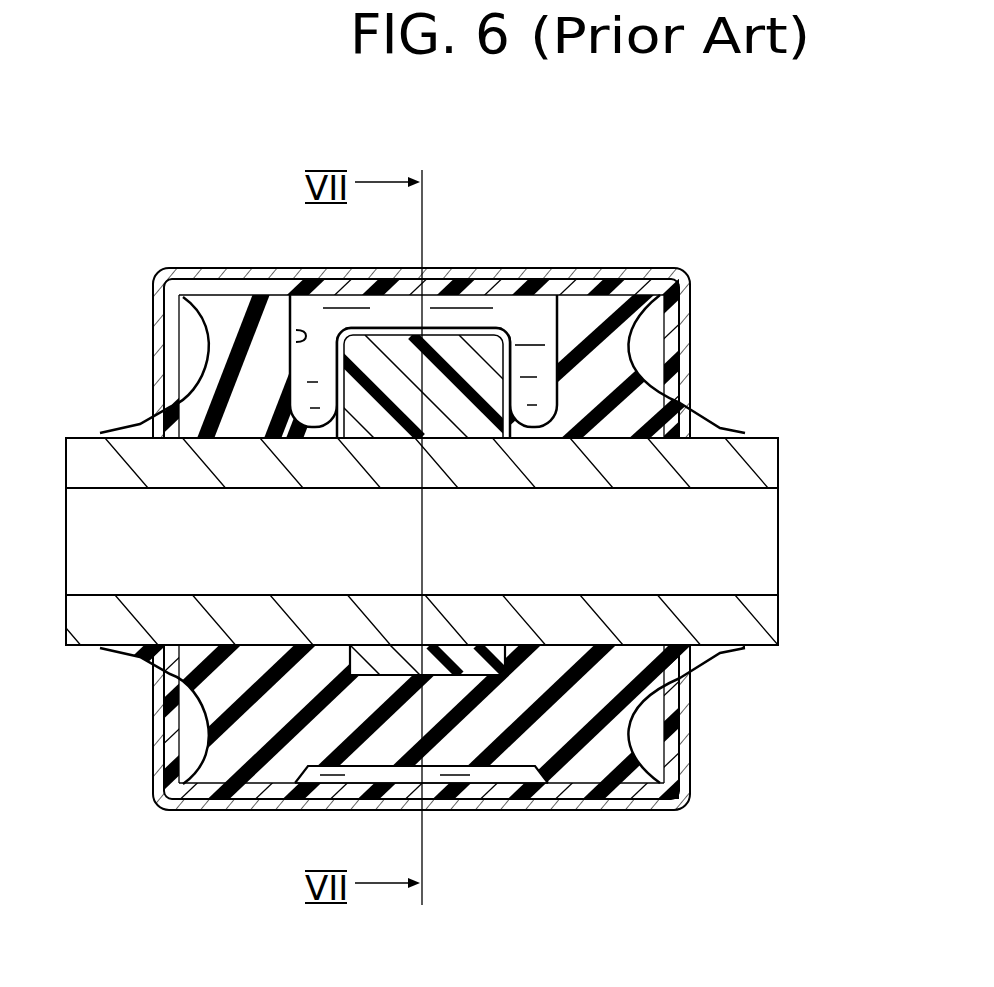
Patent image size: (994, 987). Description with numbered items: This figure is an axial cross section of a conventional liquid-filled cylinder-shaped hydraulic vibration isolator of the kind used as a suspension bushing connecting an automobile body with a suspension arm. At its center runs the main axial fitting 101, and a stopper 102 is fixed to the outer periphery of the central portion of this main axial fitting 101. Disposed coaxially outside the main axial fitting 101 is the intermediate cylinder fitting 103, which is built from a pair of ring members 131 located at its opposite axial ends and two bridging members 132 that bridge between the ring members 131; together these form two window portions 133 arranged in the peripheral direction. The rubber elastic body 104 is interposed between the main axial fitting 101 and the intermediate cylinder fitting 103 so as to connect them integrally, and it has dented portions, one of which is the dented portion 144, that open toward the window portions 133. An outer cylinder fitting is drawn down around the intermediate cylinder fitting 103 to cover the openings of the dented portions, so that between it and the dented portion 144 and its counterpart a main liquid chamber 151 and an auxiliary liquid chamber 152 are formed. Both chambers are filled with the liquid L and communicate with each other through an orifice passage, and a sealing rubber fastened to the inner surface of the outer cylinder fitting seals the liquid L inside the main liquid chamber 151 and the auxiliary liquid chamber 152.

The main axial fitting 101 is at (783, 462).
The stopper 102 is at (452, 448).
The intermediate cylinder fitting 103 is at (690, 775).
The rubber elastic body 104 is at (660, 716).
The ring members 131 is at (200, 290).
The bridging members 132 is at (488, 778).
The window portions 133 is at (290, 297).
The dented portion 144 is at (296, 333).
The main liquid chamber 151 is at (463, 295).
The auxiliary liquid chamber 152 is at (432, 790).
The liquid L is at (537, 338).